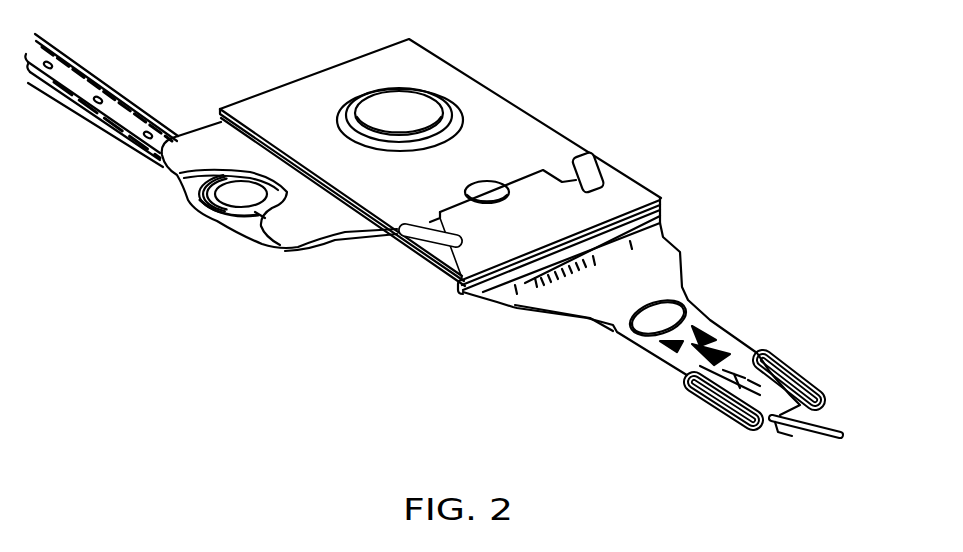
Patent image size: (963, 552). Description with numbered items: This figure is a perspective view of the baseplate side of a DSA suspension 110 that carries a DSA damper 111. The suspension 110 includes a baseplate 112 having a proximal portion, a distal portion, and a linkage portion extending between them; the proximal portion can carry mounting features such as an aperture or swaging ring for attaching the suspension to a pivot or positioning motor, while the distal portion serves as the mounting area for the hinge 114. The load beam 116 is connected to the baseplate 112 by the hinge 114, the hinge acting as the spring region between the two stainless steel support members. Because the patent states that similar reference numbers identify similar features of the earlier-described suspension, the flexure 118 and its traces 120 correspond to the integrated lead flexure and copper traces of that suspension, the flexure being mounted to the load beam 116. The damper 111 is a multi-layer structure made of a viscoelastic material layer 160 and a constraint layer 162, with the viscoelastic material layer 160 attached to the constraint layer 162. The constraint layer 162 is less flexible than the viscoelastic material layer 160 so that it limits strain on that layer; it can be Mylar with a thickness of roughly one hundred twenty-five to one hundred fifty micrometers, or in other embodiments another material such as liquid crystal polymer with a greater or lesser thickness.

The DSA suspension 110 is at (514, 84).
The DSA damper 111 is at (636, 204).
The baseplate 112 is at (542, 133).
The hinge 114 is at (657, 232).
The load beam 116 is at (677, 295).
The gimbal / head tip 118 is at (806, 384).
The flexible circuit cable 120 is at (210, 207).
The viscoelastic material layer 160 is at (452, 280).
The constraint layer 162 is at (437, 265).